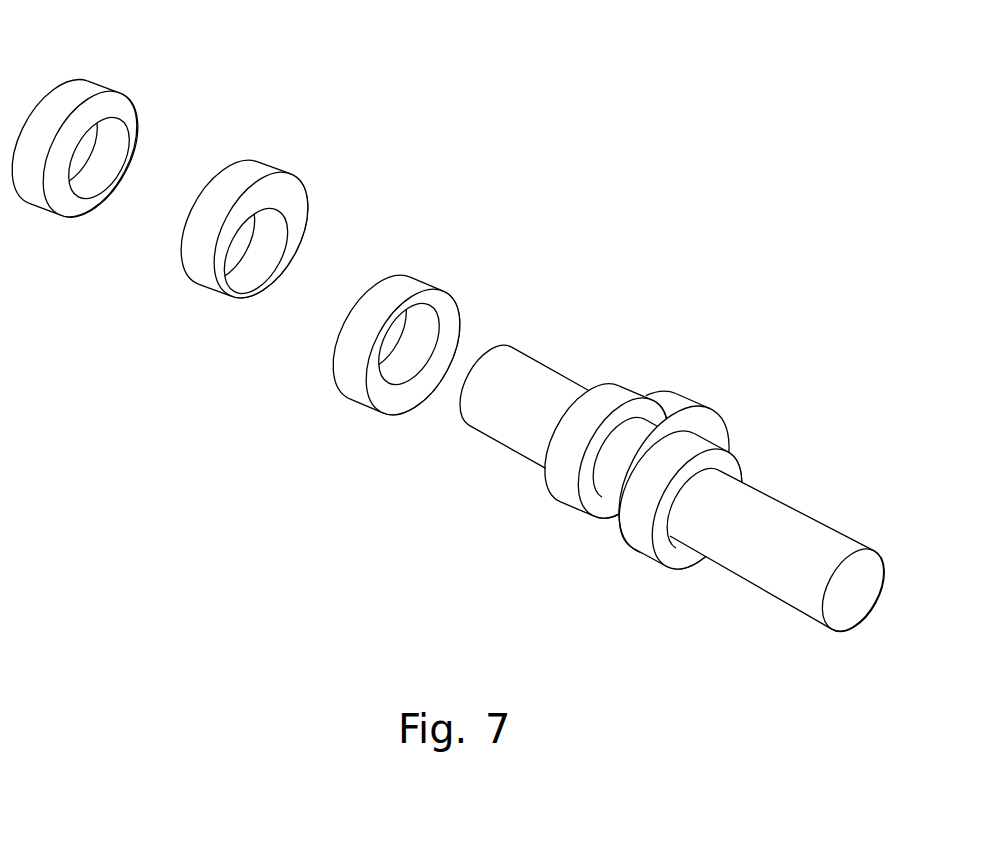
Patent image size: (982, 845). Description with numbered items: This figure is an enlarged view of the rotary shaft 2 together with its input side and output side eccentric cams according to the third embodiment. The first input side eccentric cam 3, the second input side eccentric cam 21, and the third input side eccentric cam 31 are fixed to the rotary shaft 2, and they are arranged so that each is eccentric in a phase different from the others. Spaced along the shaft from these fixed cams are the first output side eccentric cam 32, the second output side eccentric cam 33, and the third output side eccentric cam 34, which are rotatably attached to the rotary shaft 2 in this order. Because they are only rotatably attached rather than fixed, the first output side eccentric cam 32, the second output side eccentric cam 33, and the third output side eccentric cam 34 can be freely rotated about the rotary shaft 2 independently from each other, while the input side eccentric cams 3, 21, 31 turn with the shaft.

The rotary shaft 2 is at (760, 515).
The second input side eccentric cam 21 is at (652, 413).
The first input side eccentric cam 3 is at (641, 535).
The third input side eccentric cam 31 is at (563, 483).
The first output side eccentric cam 32 is at (404, 288).
The second output side eccentric cam 33 is at (252, 173).
The third output side eccentric cam 34 is at (72, 92).